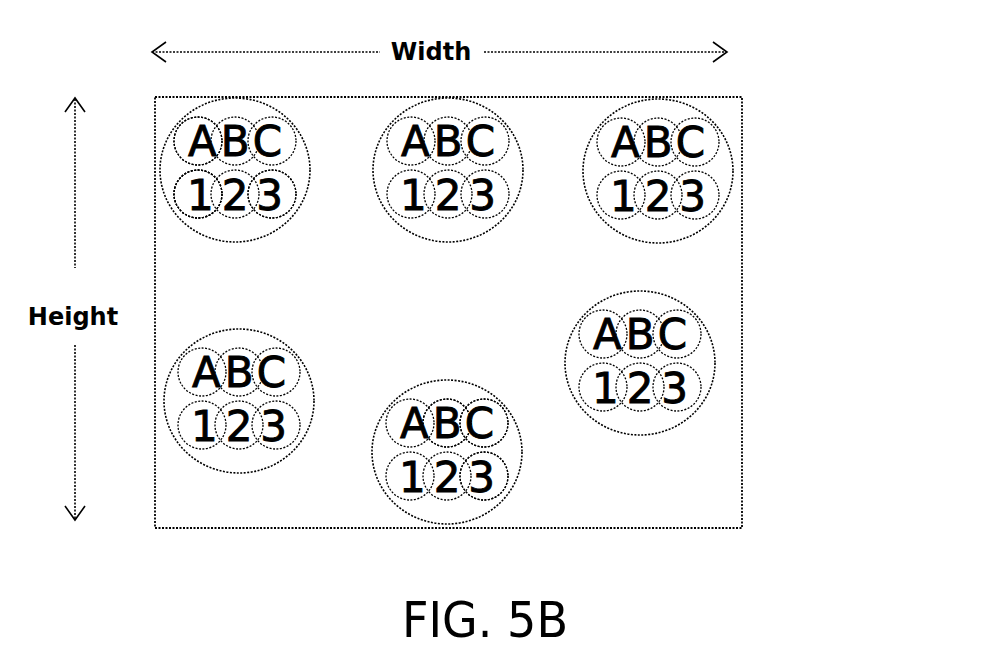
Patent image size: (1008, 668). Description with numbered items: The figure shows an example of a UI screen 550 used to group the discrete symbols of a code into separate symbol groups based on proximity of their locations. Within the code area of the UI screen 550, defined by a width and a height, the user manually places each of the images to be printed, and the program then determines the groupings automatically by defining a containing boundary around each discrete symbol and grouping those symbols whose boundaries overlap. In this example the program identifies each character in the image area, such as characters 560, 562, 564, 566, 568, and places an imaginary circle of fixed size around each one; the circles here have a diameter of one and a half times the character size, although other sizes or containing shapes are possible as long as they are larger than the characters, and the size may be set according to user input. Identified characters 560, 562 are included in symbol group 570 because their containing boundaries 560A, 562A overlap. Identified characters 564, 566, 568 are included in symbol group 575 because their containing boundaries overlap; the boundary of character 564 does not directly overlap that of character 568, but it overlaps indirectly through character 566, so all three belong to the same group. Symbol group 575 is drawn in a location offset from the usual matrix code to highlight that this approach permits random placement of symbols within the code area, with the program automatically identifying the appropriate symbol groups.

The UI screen 550 is at (773, 128).
The identified character 560 is at (190, 137).
The containing boundary 560A is at (198, 117).
The identified character 562 is at (204, 196).
The containing boundary 562A is at (203, 216).
The identified character 564 is at (440, 400).
The identified character 566 is at (472, 400).
The identified character 568 is at (490, 480).
The symbol group 570 is at (279, 221).
The symbol group 575 is at (388, 490).